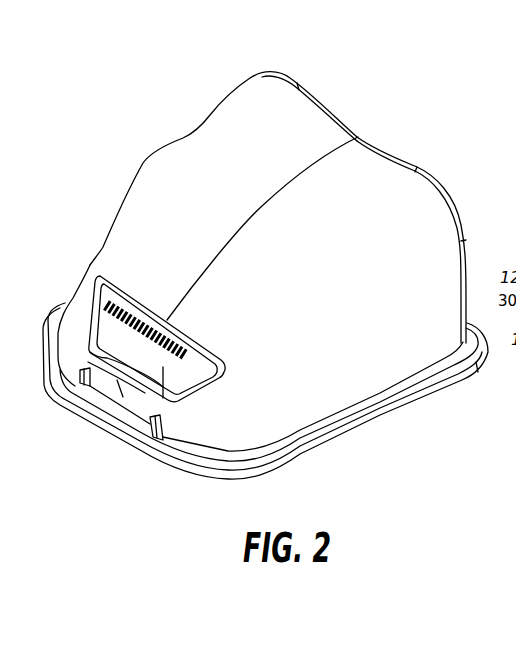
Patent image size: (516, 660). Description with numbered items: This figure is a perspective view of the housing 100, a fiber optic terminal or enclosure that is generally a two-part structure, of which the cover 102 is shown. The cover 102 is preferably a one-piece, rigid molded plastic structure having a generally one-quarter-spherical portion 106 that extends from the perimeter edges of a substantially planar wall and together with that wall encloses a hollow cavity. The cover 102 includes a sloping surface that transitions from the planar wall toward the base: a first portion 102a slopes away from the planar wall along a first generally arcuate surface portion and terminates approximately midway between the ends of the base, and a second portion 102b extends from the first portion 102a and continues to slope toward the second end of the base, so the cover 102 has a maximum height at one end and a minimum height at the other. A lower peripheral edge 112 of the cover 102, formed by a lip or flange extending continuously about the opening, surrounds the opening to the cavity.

The housing 100 is at (348, 91).
The cover 102 is at (177, 168).
The first portion 102a is at (237, 120).
The second portion 102b is at (107, 257).
The one-quarter-spherical portion 106 is at (407, 193).
The peripheral edge 112 is at (390, 413).